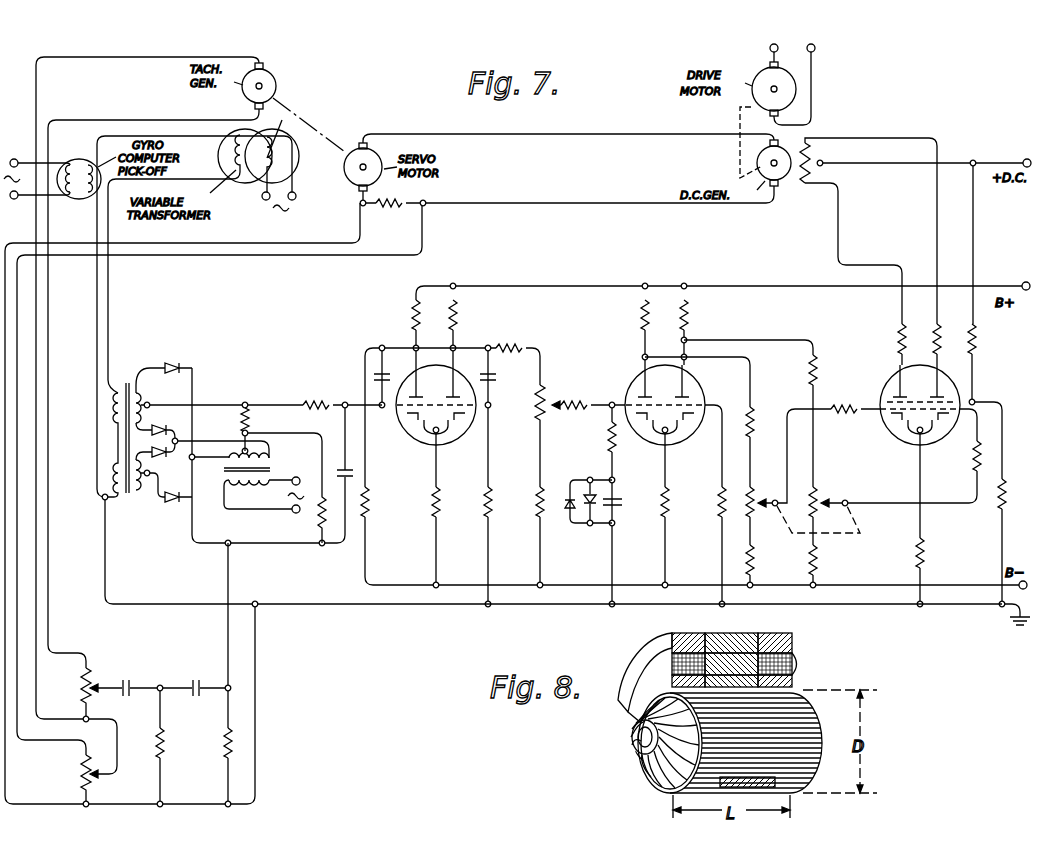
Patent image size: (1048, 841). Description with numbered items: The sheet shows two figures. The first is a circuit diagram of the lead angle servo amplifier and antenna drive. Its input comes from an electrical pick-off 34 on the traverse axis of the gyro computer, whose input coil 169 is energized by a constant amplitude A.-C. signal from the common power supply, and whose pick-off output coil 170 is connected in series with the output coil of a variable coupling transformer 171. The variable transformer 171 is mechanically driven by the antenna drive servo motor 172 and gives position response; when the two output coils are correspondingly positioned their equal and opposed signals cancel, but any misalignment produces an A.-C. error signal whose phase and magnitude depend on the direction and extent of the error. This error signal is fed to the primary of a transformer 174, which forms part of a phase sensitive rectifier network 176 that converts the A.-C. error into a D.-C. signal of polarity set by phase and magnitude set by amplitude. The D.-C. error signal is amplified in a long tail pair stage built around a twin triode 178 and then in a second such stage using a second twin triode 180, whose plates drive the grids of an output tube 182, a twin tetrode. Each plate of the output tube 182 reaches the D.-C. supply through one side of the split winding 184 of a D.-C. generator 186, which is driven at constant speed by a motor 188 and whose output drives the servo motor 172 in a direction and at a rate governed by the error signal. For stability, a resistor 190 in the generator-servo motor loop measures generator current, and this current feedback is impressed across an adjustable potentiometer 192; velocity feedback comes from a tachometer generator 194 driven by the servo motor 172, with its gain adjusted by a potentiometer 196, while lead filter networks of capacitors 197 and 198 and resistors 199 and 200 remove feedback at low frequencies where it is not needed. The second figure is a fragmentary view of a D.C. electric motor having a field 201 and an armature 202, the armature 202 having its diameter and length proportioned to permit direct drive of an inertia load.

In FIG. 7, the electrical pick-off 34 is at (78, 195).
In FIG. 7, the input coil 169 is at (72, 164).
In FIG. 7, the pick-off output coil 170 is at (84, 152).
In FIG. 7, the variable coupling transformer 171 is at (242, 131).
In FIG. 7, the antenna drive servo motor 172 is at (352, 183).
In FIG. 7, the transformer 174 is at (128, 378).
In FIG. 7, the phase sensitive rectifier network 176 is at (210, 531).
In FIG. 7, the twin triode 178 is at (468, 438).
In FIG. 7, the second twin triode 180 is at (702, 438).
In FIG. 7, the output tube 182 is at (948, 440).
In FIG. 7, the split winding 184 is at (822, 151).
In FIG. 7, the D.-C. generator 186 is at (790, 181).
In FIG. 7, the motor 188 is at (757, 72).
In FIG. 7, the resistor 190 is at (393, 210).
In FIG. 7, the potentiometer 192 is at (82, 780).
In FIG. 7, the tachometer generator 194 is at (277, 82).
In FIG. 7, the potentiometer 196 is at (82, 688).
In FIG. 7, the capacitor 197 is at (127, 675).
In FIG. 7, the capacitor 198 is at (193, 677).
In FIG. 7, the resistor 199 is at (166, 740).
In FIG. 7, the resistor 200 is at (222, 745).
In FIG. 8, the field 201 is at (790, 639).
In FIG. 8, the armature 202 is at (655, 775).